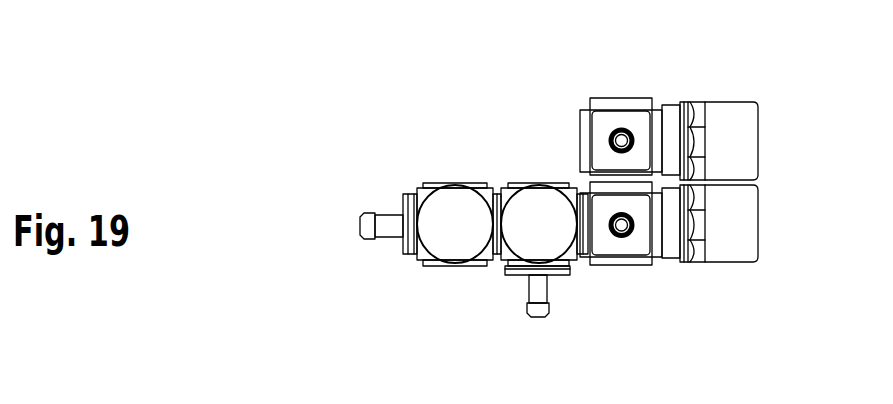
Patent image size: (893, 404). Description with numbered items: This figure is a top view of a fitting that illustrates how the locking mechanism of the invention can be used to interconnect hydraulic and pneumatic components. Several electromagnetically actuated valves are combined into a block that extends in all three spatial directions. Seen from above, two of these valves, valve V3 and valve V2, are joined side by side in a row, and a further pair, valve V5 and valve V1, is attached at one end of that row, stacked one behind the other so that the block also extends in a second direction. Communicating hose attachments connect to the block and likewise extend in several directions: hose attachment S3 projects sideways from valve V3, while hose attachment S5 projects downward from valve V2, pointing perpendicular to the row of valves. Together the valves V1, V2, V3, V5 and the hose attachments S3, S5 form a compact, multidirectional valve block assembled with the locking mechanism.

The electromagnetically actuated valve V1 is at (735, 225).
The electromagnetically actuated valve V2 is at (522, 240).
The electromagnetically actuated valve V3 is at (452, 240).
The electromagnetically actuated valve V5 is at (735, 125).
The hose attachment S3 is at (407, 205).
The hose attachment S5 is at (558, 270).